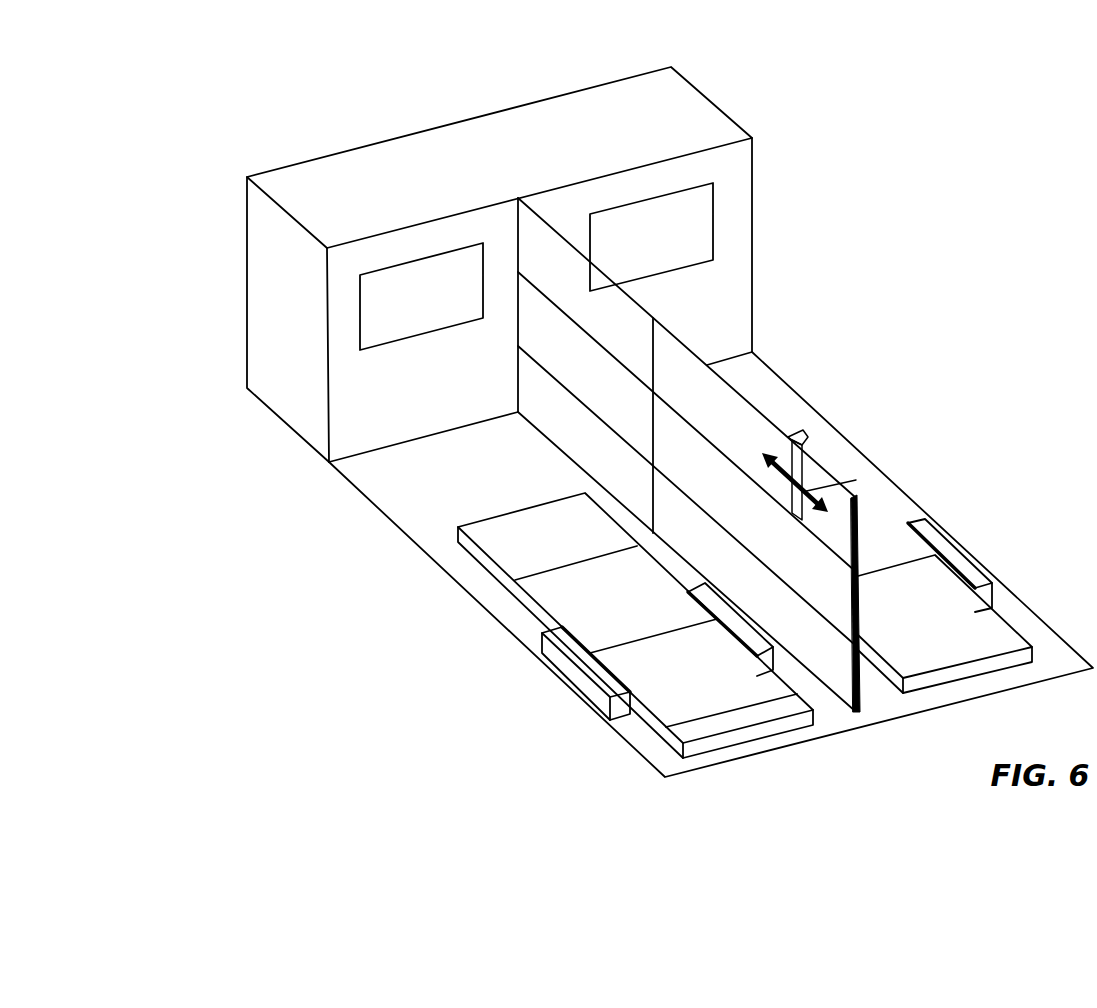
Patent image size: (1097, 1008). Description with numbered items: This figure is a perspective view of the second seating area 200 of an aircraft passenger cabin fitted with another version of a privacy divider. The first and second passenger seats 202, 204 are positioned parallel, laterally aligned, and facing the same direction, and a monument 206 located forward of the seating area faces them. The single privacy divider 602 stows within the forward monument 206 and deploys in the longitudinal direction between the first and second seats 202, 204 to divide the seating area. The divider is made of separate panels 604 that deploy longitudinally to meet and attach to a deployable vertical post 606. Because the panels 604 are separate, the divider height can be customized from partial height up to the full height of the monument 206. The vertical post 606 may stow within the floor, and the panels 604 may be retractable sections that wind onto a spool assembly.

The second seating area 200 is at (822, 376).
The first passenger seat 202 is at (625, 668).
The second passenger seat 204 is at (952, 605).
The monument 206 is at (672, 113).
The privacy divider 602 is at (748, 379).
The separate panels 604 is at (600, 335).
The deployable vertical post 606 is at (858, 707).